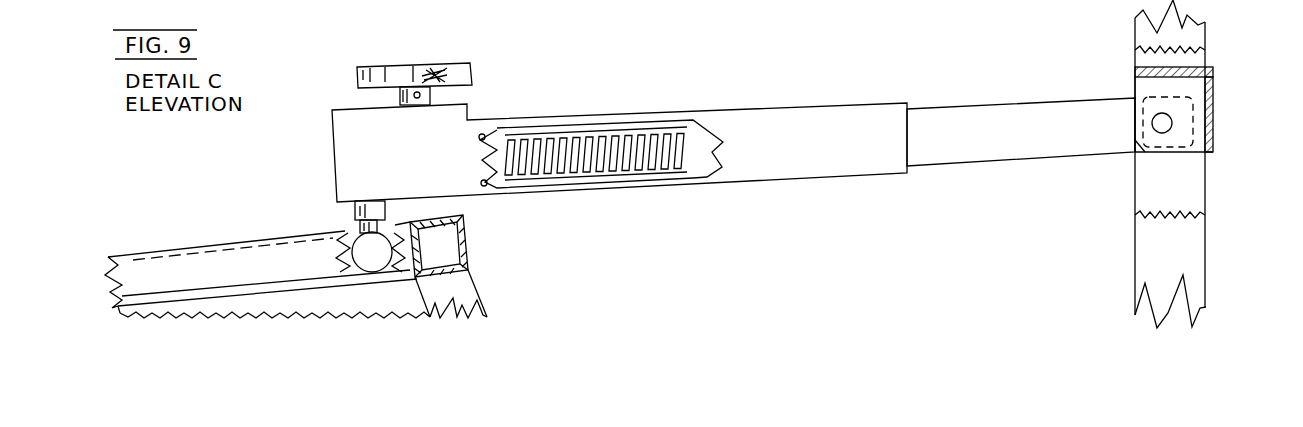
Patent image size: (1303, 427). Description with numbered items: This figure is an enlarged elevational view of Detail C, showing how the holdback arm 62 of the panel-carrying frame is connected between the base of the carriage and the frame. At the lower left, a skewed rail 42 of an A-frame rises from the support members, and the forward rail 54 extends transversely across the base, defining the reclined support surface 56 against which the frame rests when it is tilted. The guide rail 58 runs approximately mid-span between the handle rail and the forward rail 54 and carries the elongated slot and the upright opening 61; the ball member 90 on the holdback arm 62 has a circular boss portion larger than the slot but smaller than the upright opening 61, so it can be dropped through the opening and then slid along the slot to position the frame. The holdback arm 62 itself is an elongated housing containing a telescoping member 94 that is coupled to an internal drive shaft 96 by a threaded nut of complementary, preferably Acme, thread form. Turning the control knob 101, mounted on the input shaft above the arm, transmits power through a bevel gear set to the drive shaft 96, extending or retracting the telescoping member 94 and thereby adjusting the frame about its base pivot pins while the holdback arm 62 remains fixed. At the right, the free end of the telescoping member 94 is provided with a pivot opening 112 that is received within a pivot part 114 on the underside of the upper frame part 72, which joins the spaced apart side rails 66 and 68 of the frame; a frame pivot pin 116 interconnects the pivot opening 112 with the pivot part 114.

The skewed rail 42 is at (450, 288).
The forward rail 54 is at (468, 267).
The reclined support surface 56 is at (463, 217).
The guide rail 58 is at (198, 248).
The upright opening 61 is at (353, 228).
The holdback arm 62 is at (740, 183).
The side rail 66 is at (1170, 183).
The side rail 68 is at (1170, 248).
The upper frame part 72 is at (1213, 108).
The ball member 90 is at (340, 257).
The telescoping member 94 is at (1005, 133).
The drive shaft 96 is at (590, 167).
The control knob 101 is at (472, 72).
The pivot opening 112 is at (1138, 147).
The pivot part 114 is at (1145, 90).
The frame pivot pin 116 is at (1155, 120).